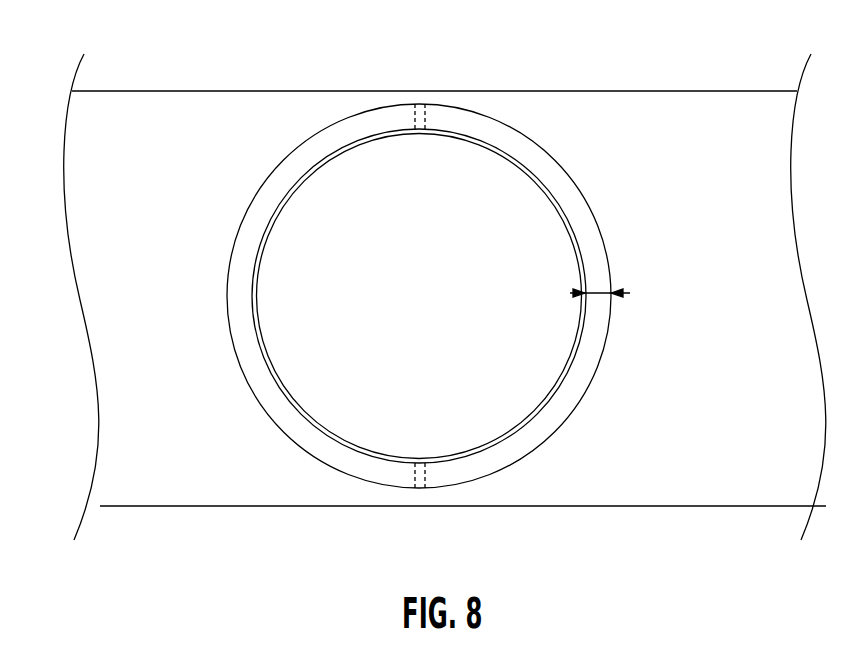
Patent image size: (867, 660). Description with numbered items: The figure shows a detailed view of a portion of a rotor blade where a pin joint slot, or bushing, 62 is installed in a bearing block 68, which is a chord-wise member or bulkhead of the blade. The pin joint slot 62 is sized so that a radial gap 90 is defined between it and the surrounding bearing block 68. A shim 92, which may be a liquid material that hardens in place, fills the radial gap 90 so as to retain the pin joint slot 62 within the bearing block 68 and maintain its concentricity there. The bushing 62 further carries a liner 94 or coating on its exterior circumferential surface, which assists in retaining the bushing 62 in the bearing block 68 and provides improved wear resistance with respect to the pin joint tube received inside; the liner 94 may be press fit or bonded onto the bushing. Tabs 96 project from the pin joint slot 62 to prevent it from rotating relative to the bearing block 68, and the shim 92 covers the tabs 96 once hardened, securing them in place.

The pin joint slot 62 is at (427, 308).
The bearing block 68 is at (669, 472).
The gap 90 is at (600, 293).
The shim 92 is at (572, 200).
The liner 94 is at (535, 420).
The tab 96 is at (415, 119).